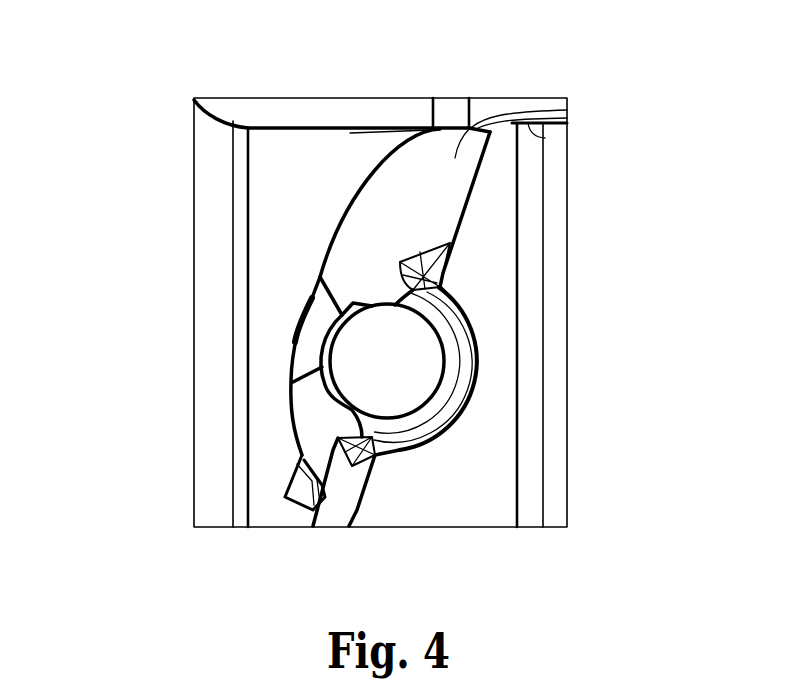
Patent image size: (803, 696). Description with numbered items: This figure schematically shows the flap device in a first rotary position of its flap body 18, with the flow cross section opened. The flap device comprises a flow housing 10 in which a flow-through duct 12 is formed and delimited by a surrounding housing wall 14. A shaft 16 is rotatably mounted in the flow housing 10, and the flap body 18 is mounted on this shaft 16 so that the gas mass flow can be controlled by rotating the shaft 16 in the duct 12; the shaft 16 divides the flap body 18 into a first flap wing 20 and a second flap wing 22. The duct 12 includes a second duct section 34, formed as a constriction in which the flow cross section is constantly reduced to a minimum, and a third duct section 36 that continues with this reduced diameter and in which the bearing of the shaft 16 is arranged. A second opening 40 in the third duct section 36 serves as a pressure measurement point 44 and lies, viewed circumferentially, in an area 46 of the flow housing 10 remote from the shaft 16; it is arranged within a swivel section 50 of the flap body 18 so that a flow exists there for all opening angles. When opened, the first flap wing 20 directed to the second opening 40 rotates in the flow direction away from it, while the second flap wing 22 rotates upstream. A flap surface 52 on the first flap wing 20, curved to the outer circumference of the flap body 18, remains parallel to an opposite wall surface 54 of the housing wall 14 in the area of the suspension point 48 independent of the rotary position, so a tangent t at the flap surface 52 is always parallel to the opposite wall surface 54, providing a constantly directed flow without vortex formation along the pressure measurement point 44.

The flow housing 10 is at (240, 108).
The flow-through duct 12 is at (380, 312).
The housing wall 14 is at (547, 138).
The shaft 16 is at (413, 358).
The flap body 18 is at (430, 206).
The first flap wing 20 is at (470, 128).
The second flap wing 22 is at (337, 503).
The second duct section 34 is at (213, 495).
The third duct section 36 is at (483, 513).
The second opening 40 is at (419, 64).
The pressure measurement point 44 is at (452, 110).
The area of the flow housing remote from the shaft 46 is at (310, 145).
The suspension point 48 is at (472, 127).
The swivel section 50 is at (308, 351).
The flap surface 52 is at (368, 178).
The opposite wall surface 54 is at (525, 115).